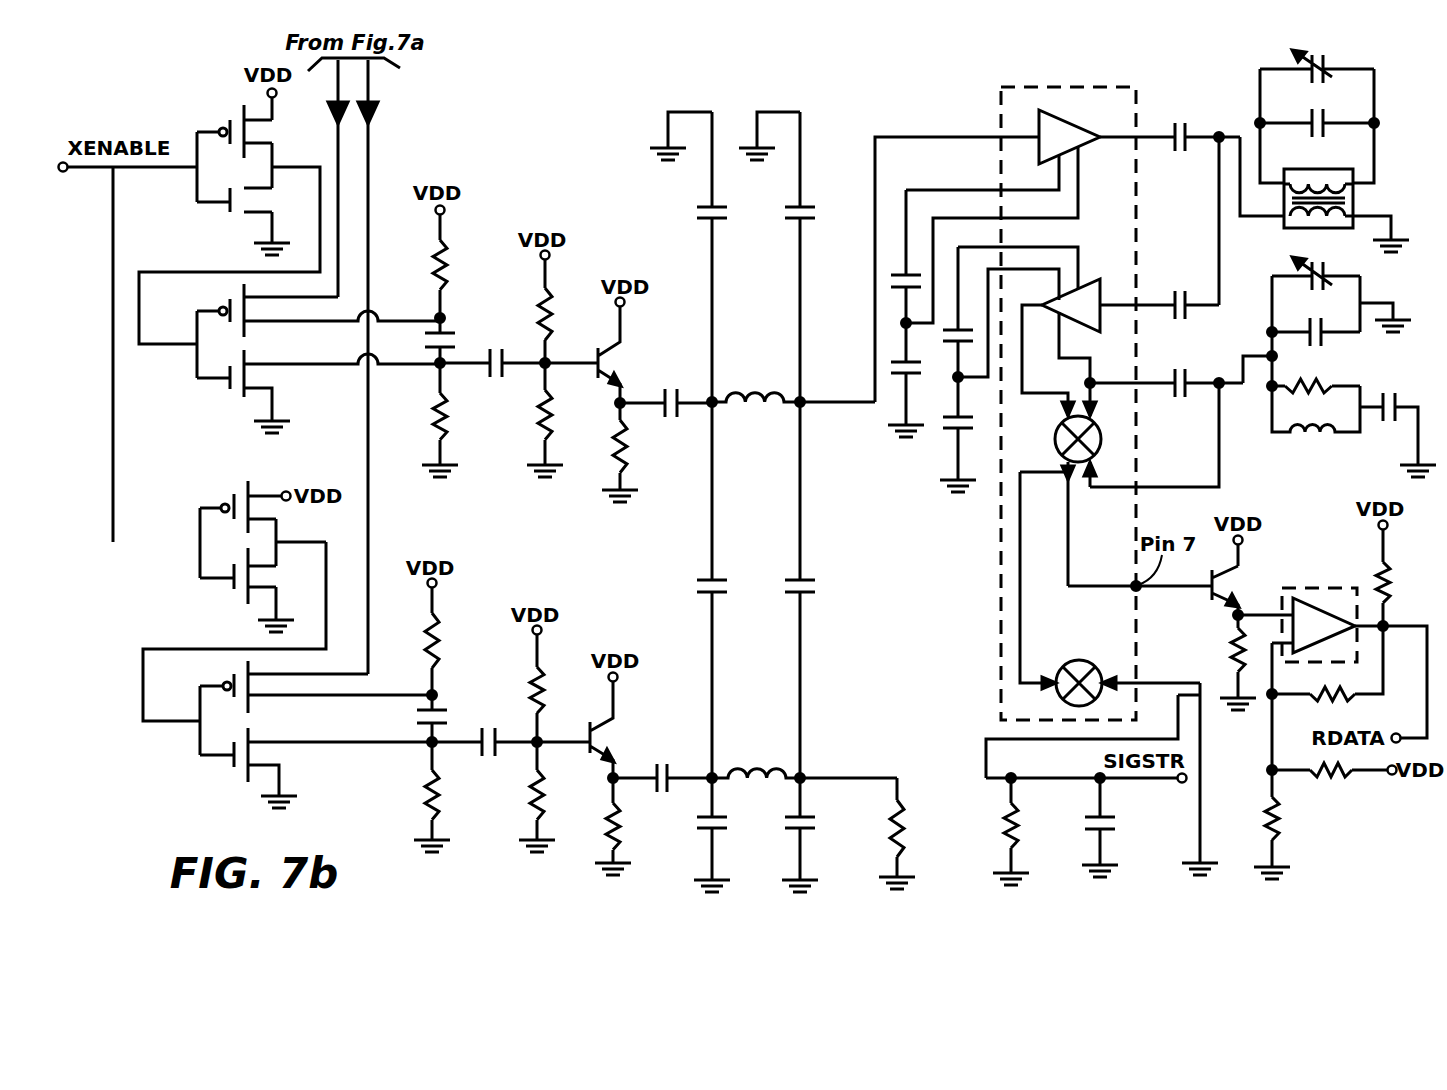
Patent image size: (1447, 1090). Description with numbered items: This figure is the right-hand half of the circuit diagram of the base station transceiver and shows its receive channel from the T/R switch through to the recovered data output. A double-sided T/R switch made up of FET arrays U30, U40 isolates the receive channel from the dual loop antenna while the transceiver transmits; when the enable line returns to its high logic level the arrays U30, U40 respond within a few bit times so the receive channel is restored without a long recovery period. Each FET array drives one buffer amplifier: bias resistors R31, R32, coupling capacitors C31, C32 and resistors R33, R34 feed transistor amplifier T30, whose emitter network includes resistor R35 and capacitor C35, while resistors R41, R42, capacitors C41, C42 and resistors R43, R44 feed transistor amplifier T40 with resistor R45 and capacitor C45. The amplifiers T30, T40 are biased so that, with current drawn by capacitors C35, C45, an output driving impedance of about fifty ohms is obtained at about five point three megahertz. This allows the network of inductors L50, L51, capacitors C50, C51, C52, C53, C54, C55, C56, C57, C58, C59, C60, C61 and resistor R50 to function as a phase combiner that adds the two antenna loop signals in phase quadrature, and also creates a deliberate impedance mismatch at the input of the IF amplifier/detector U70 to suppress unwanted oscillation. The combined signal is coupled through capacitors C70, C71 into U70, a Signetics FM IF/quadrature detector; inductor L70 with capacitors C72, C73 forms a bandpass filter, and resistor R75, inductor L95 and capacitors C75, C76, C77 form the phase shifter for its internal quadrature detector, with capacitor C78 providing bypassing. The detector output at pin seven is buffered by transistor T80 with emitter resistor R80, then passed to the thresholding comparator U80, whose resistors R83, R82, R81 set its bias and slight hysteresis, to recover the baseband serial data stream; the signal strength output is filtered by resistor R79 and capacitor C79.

The FET array U30 is at (289, 254).
The FET array U40 is at (287, 630).
The 1M resistor R31 is at (416, 266).
The 1M resistor R32 is at (422, 420).
The .01 capacitor C31 is at (419, 341).
The .01 coupling capacitor C32 is at (492, 360).
The 3K resistor R33 is at (570, 311).
The 3K resistor R34 is at (526, 418).
The transistor amplifier T30 is at (605, 357).
The capacitor C35 is at (666, 403).
The 2K resistor R35 is at (603, 452).
The 1M resistor R41 is at (408, 641).
The 1M resistor R42 is at (414, 797).
The .01 capacitor C41 is at (412, 719).
The .01 coupling capacitor C42 is at (484, 733).
The 3K resistor R43 is at (559, 688).
The 3K resistor R44 is at (519, 795).
The transistor amplifier T40 is at (596, 732).
The capacitor C45 is at (662, 778).
The 2K resistor R45 is at (597, 826).
The capacitor C50 is at (714, 257).
The capacitor C51 is at (714, 257).
The capacitor C52 is at (802, 257).
The capacitor C53 is at (802, 257).
The inductor L50 is at (792, 375).
The capacitor C54 is at (739, 590).
The capacitor C55 is at (739, 590).
The capacitor C56 is at (827, 590).
The capacitor C57 is at (827, 590).
The inductor L51 is at (803, 750).
The capacitor C58 is at (738, 835).
The capacitor C59 is at (738, 835).
The capacitor C60 is at (826, 835).
The capacitor C61 is at (826, 835).
The resistor R50 is at (930, 833).
The IF amplifier/detector U70 is at (1100, 391).
The .01 capacitor C70 is at (1198, 135).
The .01 capacitor C71 is at (1189, 305).
The capacitor C75 is at (1165, 383).
The capacitor C72 is at (1339, 54).
The capacitor C73 is at (1341, 126).
The inductor L70 is at (1362, 196).
The capacitor C76 is at (1316, 263).
The capacitor C77 is at (1340, 331).
The resistor R75 is at (1314, 371).
The inductor L95 is at (1316, 409).
The .01 capacitor C78 is at (1398, 422).
The transistor T80 is at (1242, 582).
The 2K resistor R80 is at (1222, 662).
The thresholding comparator U80 is at (1332, 651).
The 10K resistor R83 is at (1405, 580).
The 470K resistor R82 is at (1326, 698).
The 50K resistor R81 is at (1304, 821).
The 100K resistor R79 is at (1035, 830).
The .01 capacitor C79 is at (1122, 826).